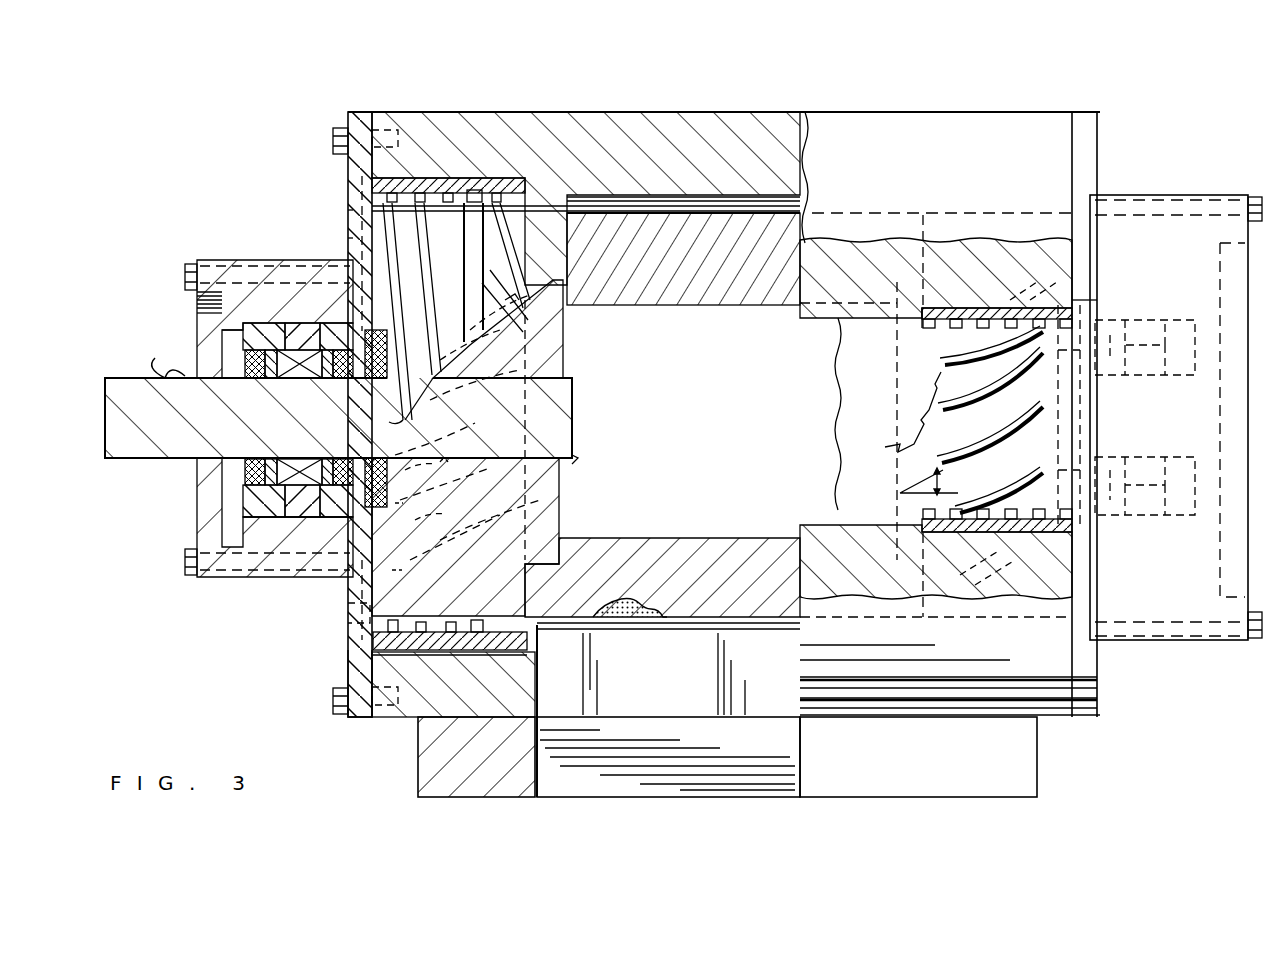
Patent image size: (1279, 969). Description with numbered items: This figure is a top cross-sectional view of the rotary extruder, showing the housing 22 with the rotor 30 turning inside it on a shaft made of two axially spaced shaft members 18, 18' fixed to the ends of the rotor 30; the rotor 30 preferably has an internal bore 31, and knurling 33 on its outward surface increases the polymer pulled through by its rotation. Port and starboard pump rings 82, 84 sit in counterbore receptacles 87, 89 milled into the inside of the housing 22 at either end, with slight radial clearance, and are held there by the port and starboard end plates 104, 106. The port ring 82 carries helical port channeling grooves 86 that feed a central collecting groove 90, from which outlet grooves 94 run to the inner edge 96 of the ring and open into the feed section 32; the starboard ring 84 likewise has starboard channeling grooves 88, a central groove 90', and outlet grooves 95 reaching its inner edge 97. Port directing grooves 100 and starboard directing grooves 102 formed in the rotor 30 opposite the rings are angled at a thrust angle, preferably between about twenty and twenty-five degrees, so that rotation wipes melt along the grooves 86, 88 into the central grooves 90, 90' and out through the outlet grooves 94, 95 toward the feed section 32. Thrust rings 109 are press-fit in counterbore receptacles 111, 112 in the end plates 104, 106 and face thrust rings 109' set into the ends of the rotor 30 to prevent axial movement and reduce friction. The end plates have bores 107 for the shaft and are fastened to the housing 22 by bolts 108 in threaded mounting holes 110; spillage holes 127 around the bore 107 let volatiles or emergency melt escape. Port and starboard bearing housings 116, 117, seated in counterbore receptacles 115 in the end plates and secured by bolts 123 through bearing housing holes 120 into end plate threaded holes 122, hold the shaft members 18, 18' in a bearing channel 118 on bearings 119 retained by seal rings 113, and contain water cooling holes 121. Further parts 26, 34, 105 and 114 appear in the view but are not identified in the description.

The shaft member 18 is at (338, 432).
The shaft member 18' is at (1249, 420).
The housing 22 is at (655, 169).
The base 26 is at (1040, 745).
The rotor 30 is at (697, 206).
The internal bore 31 is at (726, 304).
The feed section 32 is at (742, 208).
The knurling 33 is at (623, 624).
The liner 34 is at (656, 629).
The port pump ring 82 is at (428, 197).
The starboard pump ring 84 is at (922, 339).
The port channeling grooves 86 is at (388, 200).
The port counterbore receptacle 87 is at (498, 200).
The starboard channeling grooves 88 is at (1042, 538).
The starboard counterbore receptacle 89 is at (905, 545).
The central collecting groove 90 is at (493, 212).
The central collecting groove 90' is at (973, 288).
The helical right hand outlet grooves 94 is at (508, 296).
The helical left hand outlet grooves 95 is at (930, 315).
The inner edge 96 is at (570, 378).
The inner edge 97 is at (913, 236).
The port directing grooves 100 is at (568, 498).
The starboard directing grooves 102 is at (885, 447).
The port end plate 104 is at (346, 112).
The end plate bottom 105 is at (344, 714).
The starboard end plate 106 is at (1101, 121).
The bore 107 is at (357, 447).
The bolts 108 is at (333, 132).
The thrust rings 109 is at (718, 541).
The thrust rings 109' is at (774, 484).
The threaded mounting holes 110 is at (386, 133).
The thrust ring counterbore receptacle 111 is at (352, 271).
The thrust ring counterbore receptacle 112 is at (1062, 321).
The seal rings 113 is at (340, 505).
The end flange 114 is at (1090, 196).
The counterbore receptacles 115 is at (354, 244).
The port bearing housing 116 is at (206, 250).
The starboard bearing housing 117 is at (1214, 193).
The bearing channel 118 is at (234, 379).
The bearings 119 is at (302, 374).
The bearing housing holes 120 is at (354, 210).
The water cooling holes 121 is at (223, 343).
The end plate threaded holes 122 is at (230, 264).
The bolts 123 is at (192, 263).
The spillage holes 127 is at (350, 186).